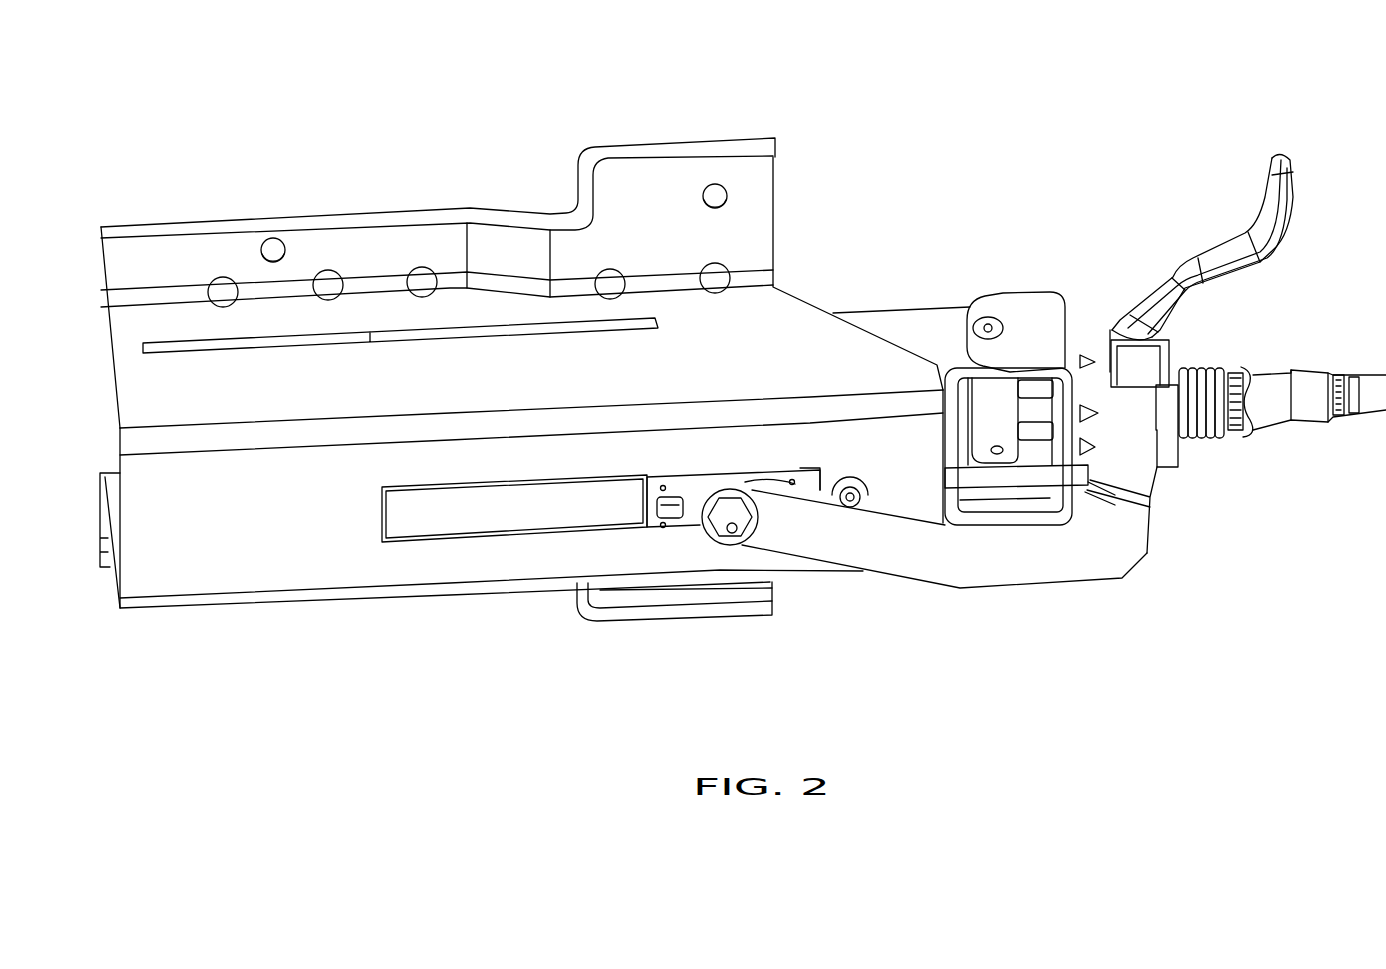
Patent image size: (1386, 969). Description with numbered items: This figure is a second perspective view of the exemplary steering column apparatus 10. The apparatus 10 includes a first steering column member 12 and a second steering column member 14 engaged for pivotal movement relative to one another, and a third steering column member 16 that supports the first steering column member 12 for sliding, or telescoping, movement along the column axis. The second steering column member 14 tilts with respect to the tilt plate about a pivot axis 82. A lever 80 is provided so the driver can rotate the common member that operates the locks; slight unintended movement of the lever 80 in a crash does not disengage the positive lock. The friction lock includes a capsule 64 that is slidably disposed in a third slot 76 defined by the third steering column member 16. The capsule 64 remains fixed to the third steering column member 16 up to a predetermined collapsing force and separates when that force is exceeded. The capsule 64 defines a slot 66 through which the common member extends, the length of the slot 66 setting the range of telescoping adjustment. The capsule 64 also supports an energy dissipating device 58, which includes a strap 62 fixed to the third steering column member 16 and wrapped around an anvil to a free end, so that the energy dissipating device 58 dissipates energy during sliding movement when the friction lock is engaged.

The apparatus 10 is at (305, 103).
The first steering column member 12 is at (892, 323).
The second steering column member 14 is at (1047, 297).
The third steering column member 16 is at (302, 552).
The energy dissipating device 58 is at (822, 611).
The strap 62 is at (1008, 480).
The capsule 64 is at (680, 523).
The slot 66 is at (657, 530).
The third slot 76 is at (546, 524).
The lever 80 is at (1130, 553).
The pivot axis 82 is at (988, 318).